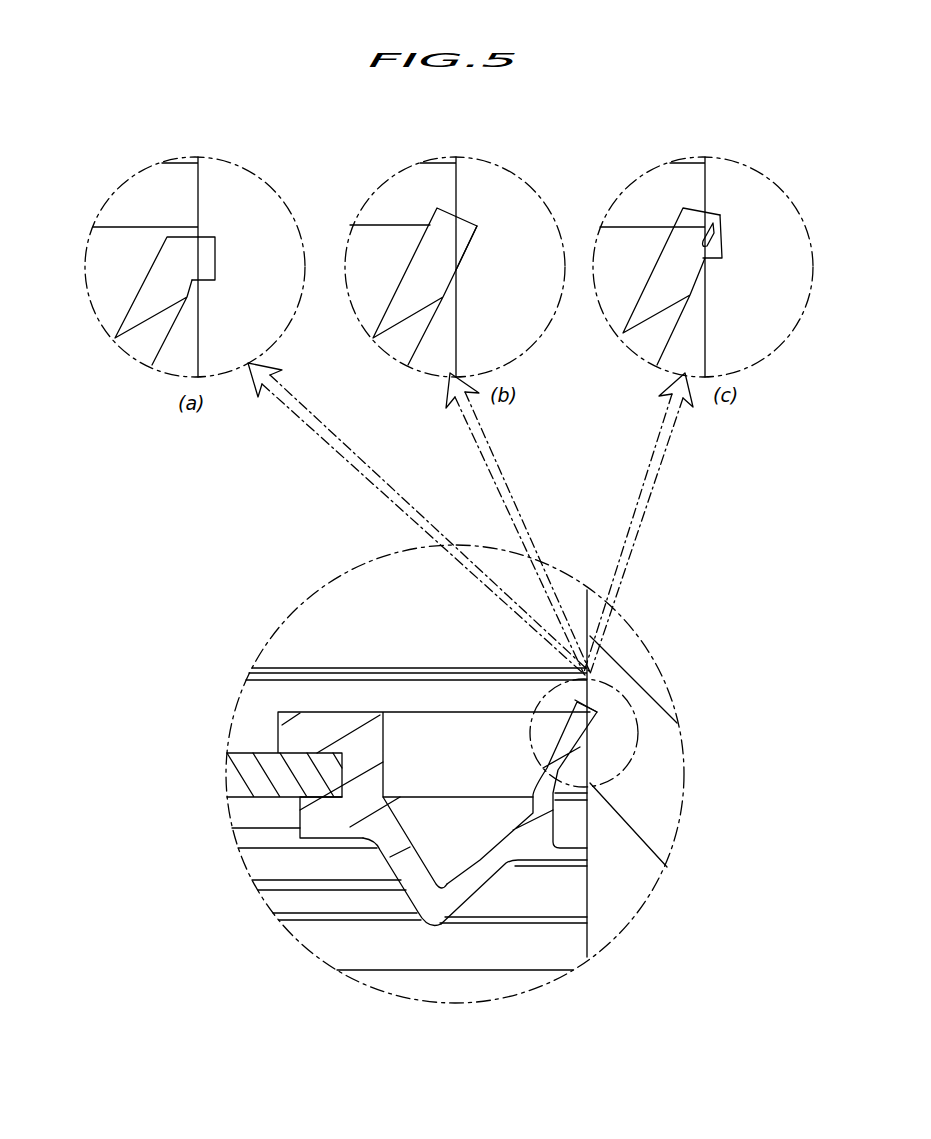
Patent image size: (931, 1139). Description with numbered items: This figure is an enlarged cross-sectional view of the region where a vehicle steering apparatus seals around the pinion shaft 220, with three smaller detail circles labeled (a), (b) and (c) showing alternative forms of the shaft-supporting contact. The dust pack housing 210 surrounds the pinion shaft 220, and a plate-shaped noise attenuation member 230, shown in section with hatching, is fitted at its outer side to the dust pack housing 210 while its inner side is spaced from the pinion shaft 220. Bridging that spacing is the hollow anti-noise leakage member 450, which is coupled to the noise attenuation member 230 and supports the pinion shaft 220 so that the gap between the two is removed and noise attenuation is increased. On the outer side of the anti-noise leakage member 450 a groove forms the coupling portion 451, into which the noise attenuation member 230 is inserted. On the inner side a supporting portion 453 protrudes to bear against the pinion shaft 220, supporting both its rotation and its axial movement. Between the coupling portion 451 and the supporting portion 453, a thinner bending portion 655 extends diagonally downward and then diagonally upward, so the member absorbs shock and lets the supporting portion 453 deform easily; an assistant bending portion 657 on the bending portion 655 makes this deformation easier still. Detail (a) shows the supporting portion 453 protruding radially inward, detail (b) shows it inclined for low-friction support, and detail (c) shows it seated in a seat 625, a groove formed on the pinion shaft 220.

The dust pack housing 210 is at (242, 723).
The pinion shaft 220 is at (270, 208).
The noise attenuation member 230 is at (240, 778).
The anti-noise leakage member 450 is at (490, 900).
The coupling portion 451 is at (300, 810).
The supporting portion 453 is at (208, 243).
The seat 625 is at (715, 233).
The bending portion 655 is at (425, 902).
The assistant bending portion 657 is at (535, 848).